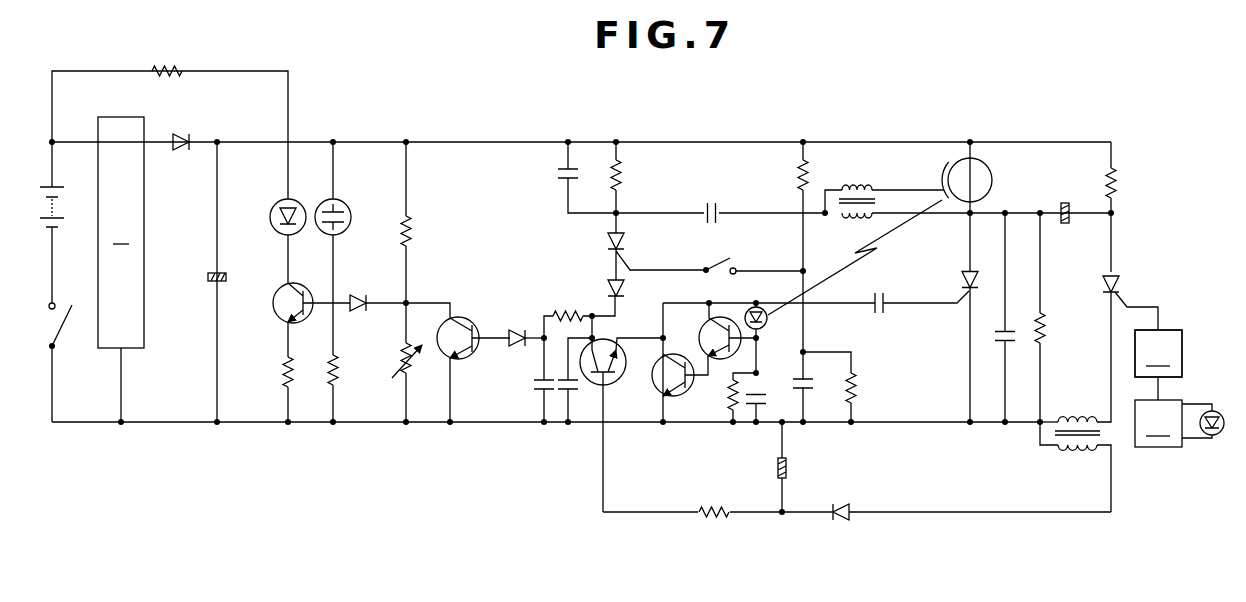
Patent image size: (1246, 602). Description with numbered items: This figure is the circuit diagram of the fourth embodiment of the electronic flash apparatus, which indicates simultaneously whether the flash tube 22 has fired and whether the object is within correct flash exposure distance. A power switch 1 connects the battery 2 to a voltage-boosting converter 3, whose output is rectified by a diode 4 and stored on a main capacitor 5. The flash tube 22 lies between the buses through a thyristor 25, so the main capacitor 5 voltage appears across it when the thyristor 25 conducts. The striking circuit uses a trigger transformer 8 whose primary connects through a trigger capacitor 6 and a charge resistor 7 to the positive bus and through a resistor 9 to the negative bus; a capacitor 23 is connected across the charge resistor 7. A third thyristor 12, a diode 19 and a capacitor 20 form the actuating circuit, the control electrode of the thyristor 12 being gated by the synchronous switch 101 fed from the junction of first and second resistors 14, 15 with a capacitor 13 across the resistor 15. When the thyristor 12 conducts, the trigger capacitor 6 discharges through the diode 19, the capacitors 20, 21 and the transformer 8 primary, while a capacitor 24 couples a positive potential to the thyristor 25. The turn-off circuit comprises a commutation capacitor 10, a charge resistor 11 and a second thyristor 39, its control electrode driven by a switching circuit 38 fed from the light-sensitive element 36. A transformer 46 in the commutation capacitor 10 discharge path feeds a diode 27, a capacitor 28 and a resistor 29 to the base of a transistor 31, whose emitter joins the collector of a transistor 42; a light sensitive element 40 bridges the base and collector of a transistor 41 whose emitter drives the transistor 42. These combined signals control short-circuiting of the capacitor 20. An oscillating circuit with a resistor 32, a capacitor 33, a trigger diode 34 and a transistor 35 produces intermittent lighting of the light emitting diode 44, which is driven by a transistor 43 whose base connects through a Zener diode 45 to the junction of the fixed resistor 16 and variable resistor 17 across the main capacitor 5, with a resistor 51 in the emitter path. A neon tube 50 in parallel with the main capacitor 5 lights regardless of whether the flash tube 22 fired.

The power switch 1 is at (62, 362).
The battery 2 is at (60, 222).
The voltage-boosting converter 3 is at (121, 269).
The diode 4 is at (181, 129).
The main capacitor 5 is at (209, 282).
The trigger capacitor 6 is at (720, 201).
The charge resistor 7 is at (624, 179).
The trigger transformer 8 is at (966, 215).
The resistor 9 is at (1049, 327).
The commutation capacitor 10 is at (1066, 201).
The charge resistor 11 is at (1123, 207).
The third thyristor 12 is at (657, 246).
The capacitor 13 is at (808, 390).
The first resistor 14 is at (790, 282).
The second resistor 15 is at (842, 387).
The fixed resistor 16 is at (418, 242).
The variable resistor 17 is at (414, 382).
The diode 19 is at (629, 289).
The capacitor 20 is at (577, 383).
The capacitor 21 is at (993, 316).
The flash tube 22 is at (980, 179).
The capacitor 23 is at (575, 177).
The capacitor 24 is at (918, 314).
The thyristor 25 is at (957, 317).
The diode 27 is at (946, 499).
The capacitor 28 is at (766, 468).
The resistor 29 is at (692, 499).
The transistor 31 is at (618, 385).
The resistor 32 is at (579, 312).
The capacitor 33 is at (530, 380).
The trigger diode 34 is at (525, 326).
The transistor 35 is at (458, 358).
The light-sensitive element 36 is at (1213, 436).
The switching circuit 38 is at (1158, 353).
The second thyristor 39 is at (1139, 360).
The light sensitive element 40 is at (835, 311).
The transistor 41 is at (725, 359).
The transistor 42 is at (673, 396).
The transistor 43 is at (297, 352).
The light emitting diode 44 is at (274, 241).
The Zener diode 45 is at (375, 288).
The transformer 46 is at (1075, 464).
The neon tube 50 is at (347, 248).
The resistor 51 is at (346, 388).
The synchronous switch 101 is at (742, 262).